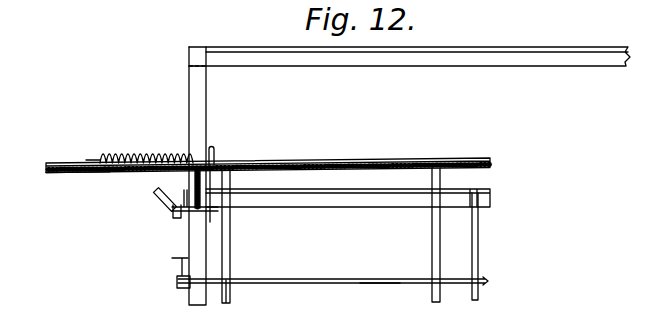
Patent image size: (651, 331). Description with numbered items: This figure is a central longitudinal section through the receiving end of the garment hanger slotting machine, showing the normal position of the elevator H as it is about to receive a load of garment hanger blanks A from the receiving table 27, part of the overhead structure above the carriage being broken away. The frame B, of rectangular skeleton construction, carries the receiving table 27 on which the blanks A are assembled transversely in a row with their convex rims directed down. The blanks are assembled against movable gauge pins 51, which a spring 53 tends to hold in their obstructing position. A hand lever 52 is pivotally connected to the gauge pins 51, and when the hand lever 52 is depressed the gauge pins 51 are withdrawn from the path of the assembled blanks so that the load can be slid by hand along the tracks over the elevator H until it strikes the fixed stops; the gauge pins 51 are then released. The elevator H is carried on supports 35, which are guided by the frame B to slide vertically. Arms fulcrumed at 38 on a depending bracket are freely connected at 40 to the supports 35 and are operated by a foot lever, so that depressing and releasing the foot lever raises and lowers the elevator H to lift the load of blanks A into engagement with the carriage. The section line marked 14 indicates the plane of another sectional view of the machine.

The frame B is at (522, 47).
The elevator H is at (342, 158).
The garment hanger blank A is at (128, 153).
The receiving table 27 is at (62, 173).
The gauge pins 51 is at (214, 148).
The hand lever 52 is at (160, 205).
The spring 53 is at (190, 180).
The supports 35 is at (232, 244).
The fulcrum 38 is at (332, 279).
The connection 40 is at (380, 293).
The section line 14 is at (213, 325).